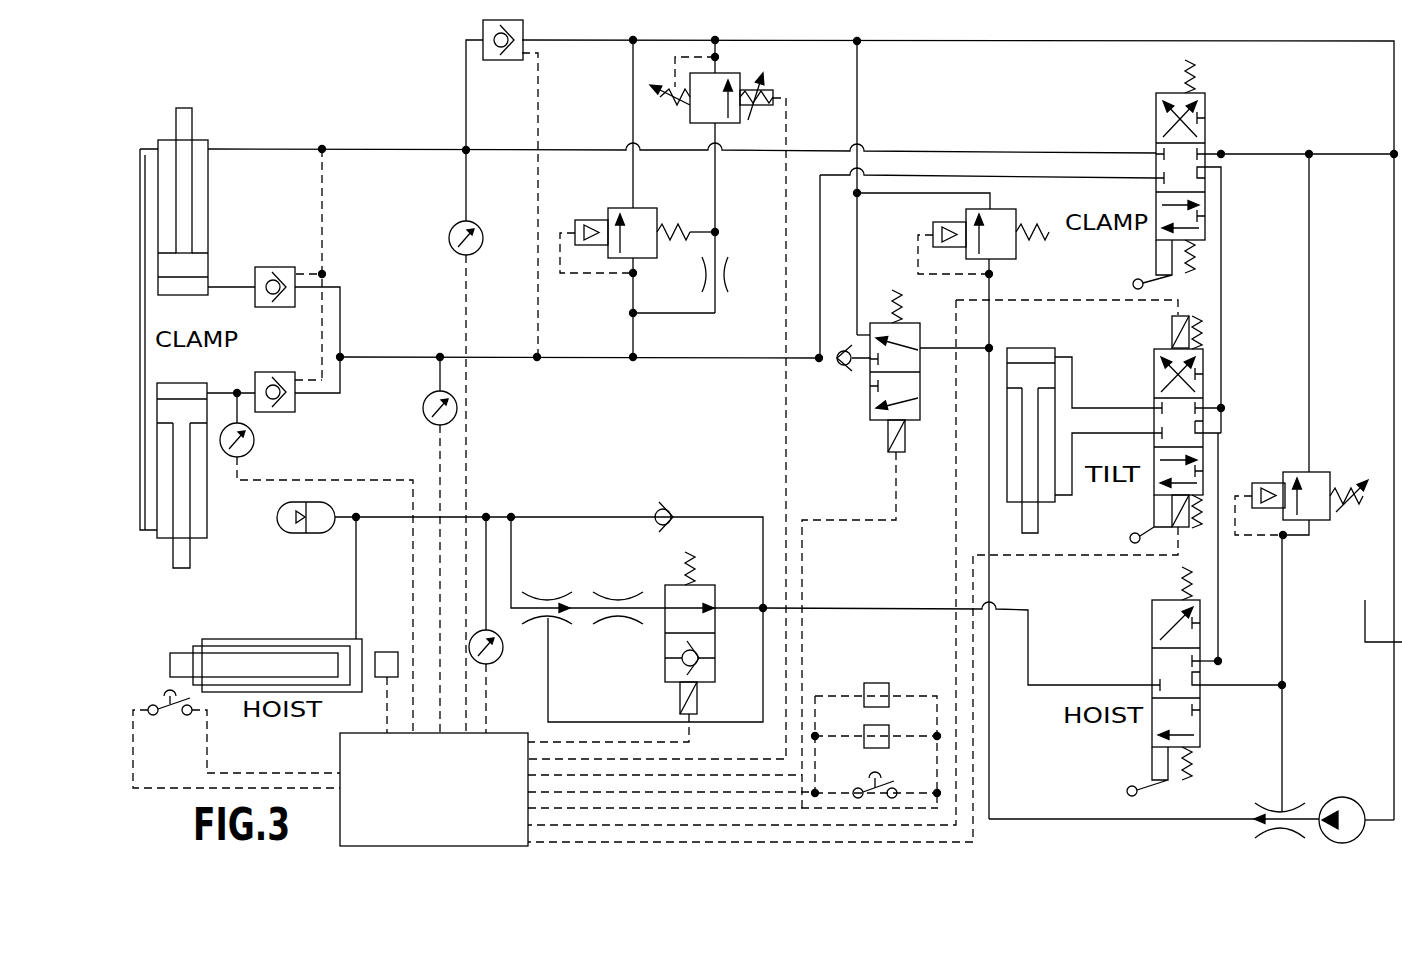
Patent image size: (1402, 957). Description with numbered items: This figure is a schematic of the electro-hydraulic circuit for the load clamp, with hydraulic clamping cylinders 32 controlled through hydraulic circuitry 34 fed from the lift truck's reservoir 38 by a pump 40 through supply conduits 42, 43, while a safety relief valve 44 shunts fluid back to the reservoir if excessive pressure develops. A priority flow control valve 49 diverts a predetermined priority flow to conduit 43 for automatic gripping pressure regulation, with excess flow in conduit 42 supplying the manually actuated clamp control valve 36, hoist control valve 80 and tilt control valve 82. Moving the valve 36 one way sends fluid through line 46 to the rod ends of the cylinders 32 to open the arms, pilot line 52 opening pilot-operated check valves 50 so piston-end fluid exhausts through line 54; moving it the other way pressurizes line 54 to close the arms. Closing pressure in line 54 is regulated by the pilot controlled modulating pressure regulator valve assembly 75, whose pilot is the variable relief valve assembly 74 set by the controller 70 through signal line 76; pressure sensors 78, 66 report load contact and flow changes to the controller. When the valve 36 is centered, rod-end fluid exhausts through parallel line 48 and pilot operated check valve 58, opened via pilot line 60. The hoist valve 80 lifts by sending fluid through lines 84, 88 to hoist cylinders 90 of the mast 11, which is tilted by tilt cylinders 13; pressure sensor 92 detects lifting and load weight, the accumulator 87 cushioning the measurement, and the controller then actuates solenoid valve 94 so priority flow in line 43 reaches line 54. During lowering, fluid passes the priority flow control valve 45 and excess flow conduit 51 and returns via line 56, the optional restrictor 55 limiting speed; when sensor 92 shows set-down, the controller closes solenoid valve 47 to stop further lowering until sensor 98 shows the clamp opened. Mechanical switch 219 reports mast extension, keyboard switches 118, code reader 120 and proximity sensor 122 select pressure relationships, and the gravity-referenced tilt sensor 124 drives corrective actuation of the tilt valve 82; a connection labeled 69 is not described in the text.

The load-lifting mast 11 is at (229, 625).
The tilt cylinder 13 is at (1038, 348).
The hydraulic clamping cylinders 32 is at (208, 187).
The hydraulic circuitry 34 is at (377, 106).
The clamp control valve 36 is at (1156, 117).
The reservoir 38 is at (1362, 602).
The pump 40 is at (1342, 797).
The supply conduit 42 is at (1282, 705).
The supply conduit 43 is at (1078, 818).
The safety relief valve 44 is at (1321, 472).
The priority flow control valve 45 is at (547, 596).
The line 46 is at (272, 149).
The solenoid valve 47 is at (716, 650).
The parallel line 48 is at (466, 88).
The priority flow control valve 49 is at (1274, 805).
The pilot-operated check valves 50 is at (275, 267).
The excess flow conduit 51 is at (548, 684).
The pilot line 52 is at (322, 190).
The line 54 is at (393, 356).
The restrictor 55 is at (620, 596).
The line 56 is at (1267, 154).
The pilot operated check valve 58 is at (503, 64).
The pilot line 60 is at (538, 306).
The pressure sensor 66 is at (255, 440).
The signal line 69 is at (466, 457).
The controller 70 is at (420, 824).
The variable relief valve assembly 74 is at (698, 124).
The pilot controlled modulating pressure regulator valve assembly 75 is at (616, 208).
The signal line 76 is at (785, 458).
The pressure sensor 78 is at (422, 408).
The hoist control valve 80 is at (1152, 618).
The tilt control valve 82 is at (1154, 371).
The line 84 is at (905, 608).
The accumulator 87 is at (317, 535).
The line 88 is at (383, 519).
The hoist cylinders 90 is at (275, 638).
The pressure sensor 92 is at (497, 663).
The solenoid valve 94 is at (870, 398).
The pressure sensor 98 is at (449, 239).
The keyboard switches 118 is at (870, 754).
The electronic code reader 120 is at (889, 734).
The proximity sensor 122 is at (877, 681).
The gravity-referenced tilt sensor 124 is at (387, 652).
The mechanical switch 219 is at (168, 728).